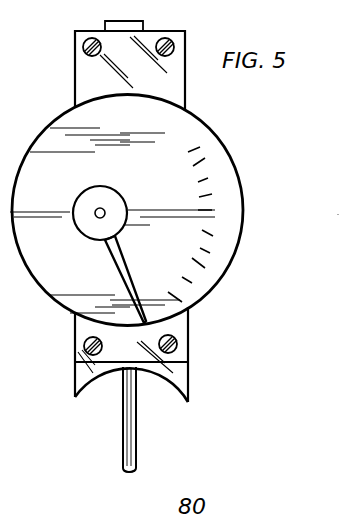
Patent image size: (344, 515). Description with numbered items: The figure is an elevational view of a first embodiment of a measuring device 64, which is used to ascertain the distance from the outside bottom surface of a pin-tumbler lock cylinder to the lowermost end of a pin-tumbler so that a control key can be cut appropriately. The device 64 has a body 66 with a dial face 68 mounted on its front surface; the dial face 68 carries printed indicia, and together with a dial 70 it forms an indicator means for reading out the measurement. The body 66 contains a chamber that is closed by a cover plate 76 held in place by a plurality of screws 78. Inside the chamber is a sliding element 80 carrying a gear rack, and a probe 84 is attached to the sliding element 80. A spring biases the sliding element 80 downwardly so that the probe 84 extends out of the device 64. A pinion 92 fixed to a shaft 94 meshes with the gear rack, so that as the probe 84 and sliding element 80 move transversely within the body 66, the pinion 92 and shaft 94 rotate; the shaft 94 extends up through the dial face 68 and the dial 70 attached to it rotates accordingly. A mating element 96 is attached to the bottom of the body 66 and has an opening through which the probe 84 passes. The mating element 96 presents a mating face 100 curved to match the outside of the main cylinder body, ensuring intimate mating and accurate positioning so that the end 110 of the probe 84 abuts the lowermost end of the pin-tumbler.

The measuring device 64 is at (222, 118).
The body 66 is at (177, 30).
The dial face 68 is at (201, 196).
The dial 70 is at (121, 265).
The cover plate 76 is at (87, 83).
The screws 78 is at (82, 49).
The sliding element 80 is at (133, 17).
The probe 84 is at (122, 449).
The pinion 92 is at (337, 214).
The shaft 94 is at (100, 213).
The mating element 96 is at (178, 374).
The mating face 100 is at (186, 402).
The end of probe 110 is at (128, 473).